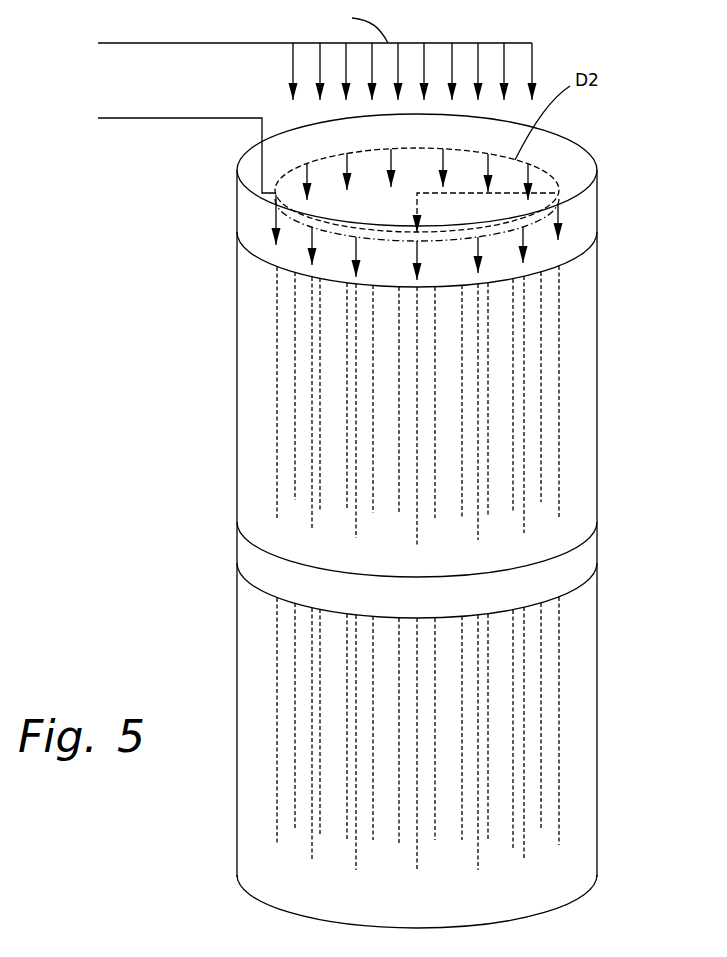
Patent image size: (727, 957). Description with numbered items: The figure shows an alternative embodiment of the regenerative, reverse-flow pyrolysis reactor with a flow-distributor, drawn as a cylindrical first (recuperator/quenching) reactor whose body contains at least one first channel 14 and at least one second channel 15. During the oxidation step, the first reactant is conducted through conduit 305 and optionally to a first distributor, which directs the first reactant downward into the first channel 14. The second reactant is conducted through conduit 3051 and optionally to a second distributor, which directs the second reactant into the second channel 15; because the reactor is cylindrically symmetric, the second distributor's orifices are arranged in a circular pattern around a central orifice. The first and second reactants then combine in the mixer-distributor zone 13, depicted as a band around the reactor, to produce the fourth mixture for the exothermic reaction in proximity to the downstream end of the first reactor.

The conduit 305 is at (149, 45).
The conduit 3051 is at (146, 121).
The first channel 14 is at (513, 383).
The second channel 15 is at (524, 453).
The mixer-distributor zone 13 is at (572, 565).